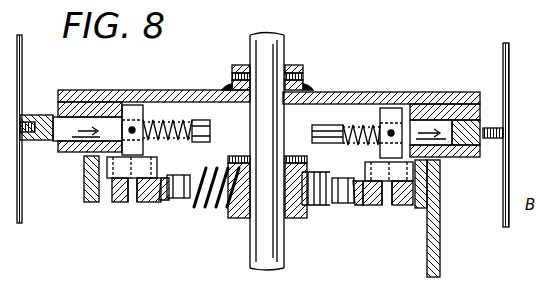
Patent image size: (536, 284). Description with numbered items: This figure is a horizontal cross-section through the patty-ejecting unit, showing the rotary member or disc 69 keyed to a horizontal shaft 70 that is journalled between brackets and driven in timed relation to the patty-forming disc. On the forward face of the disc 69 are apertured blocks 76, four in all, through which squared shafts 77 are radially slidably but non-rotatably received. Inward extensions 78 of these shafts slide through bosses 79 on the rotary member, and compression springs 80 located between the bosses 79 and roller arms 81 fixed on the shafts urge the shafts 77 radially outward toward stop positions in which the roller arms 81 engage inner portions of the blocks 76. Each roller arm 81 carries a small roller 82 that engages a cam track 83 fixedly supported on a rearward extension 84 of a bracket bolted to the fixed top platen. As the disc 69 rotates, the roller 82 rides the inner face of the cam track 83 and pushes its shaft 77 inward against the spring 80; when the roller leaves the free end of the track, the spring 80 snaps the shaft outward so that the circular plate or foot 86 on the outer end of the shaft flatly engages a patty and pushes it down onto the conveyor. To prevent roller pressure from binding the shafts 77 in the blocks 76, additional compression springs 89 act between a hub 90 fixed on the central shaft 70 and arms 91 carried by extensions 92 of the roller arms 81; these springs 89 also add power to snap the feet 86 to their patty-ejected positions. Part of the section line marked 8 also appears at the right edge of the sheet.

The disc 69 is at (388, 92).
The horizontal shaft 70 is at (285, 52).
The apertured block 76 is at (110, 107).
The squared shaft 77 is at (80, 123).
The inward extension 78 is at (177, 117).
The boss 79 is at (205, 150).
The compression spring 80 is at (162, 114).
The roller arm 81 is at (145, 148).
The roller 82 is at (104, 174).
The cam track 83 is at (93, 205).
The rearward extension 84 is at (440, 218).
The foot 86 is at (22, 52).
The wall 8 is at (510, 185).
The additional compression spring 89 is at (212, 203).
The hub 90 is at (284, 217).
The arm 91 is at (167, 202).
The extension 92 is at (133, 201).